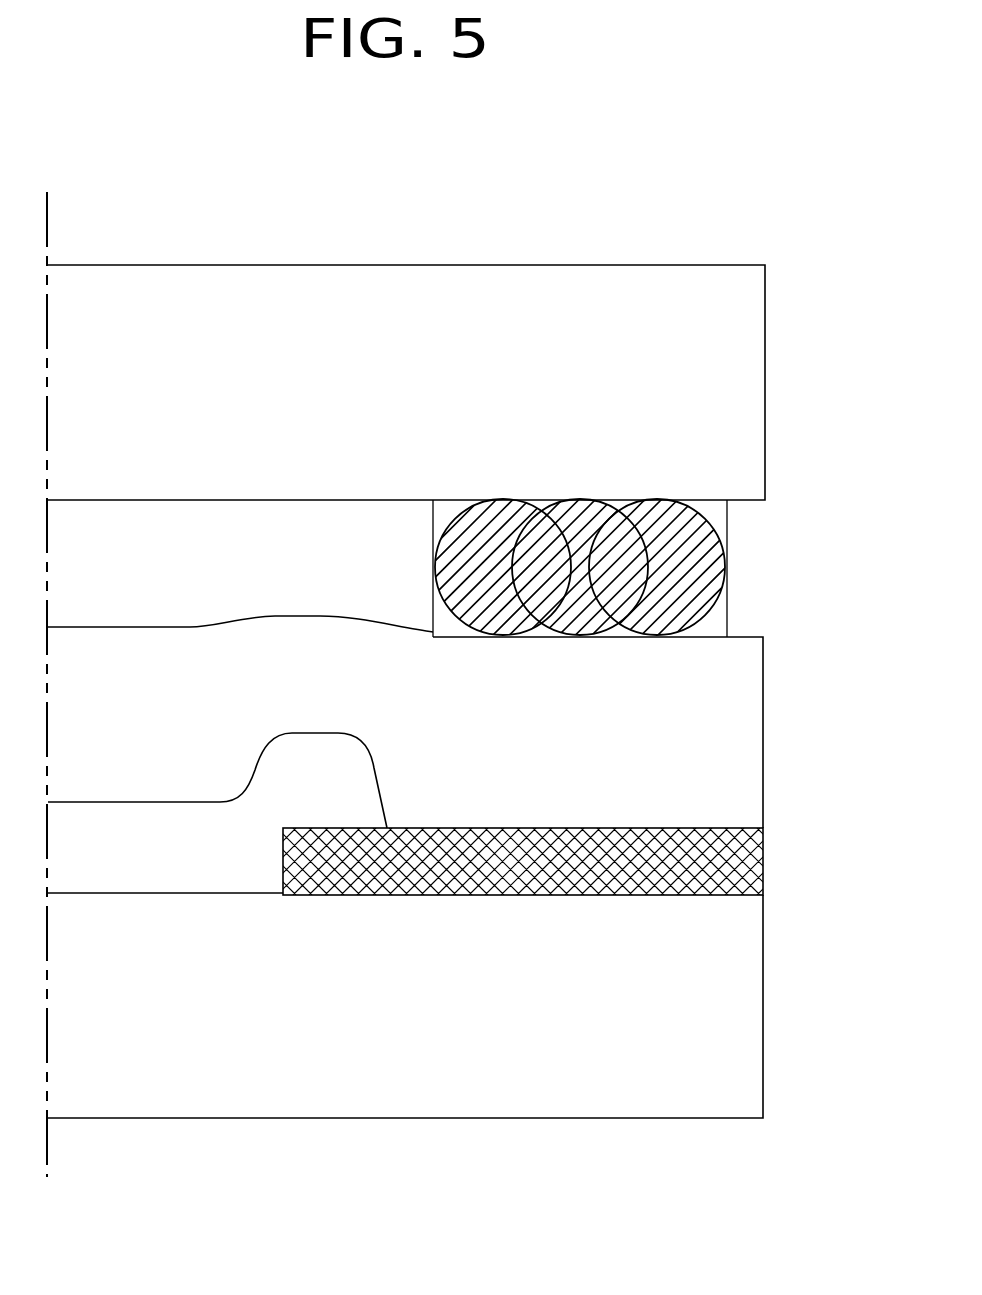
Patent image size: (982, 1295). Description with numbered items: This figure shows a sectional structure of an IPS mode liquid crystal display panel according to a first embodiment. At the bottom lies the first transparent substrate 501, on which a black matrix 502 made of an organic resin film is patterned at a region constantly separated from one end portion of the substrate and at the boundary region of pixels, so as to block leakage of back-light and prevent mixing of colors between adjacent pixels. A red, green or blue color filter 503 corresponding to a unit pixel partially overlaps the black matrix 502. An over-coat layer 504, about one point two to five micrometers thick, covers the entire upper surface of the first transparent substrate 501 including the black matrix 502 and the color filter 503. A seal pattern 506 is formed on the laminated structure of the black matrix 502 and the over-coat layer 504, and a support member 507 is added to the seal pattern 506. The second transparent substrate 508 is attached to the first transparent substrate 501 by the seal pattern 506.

The first transparent substrate 501 is at (738, 1053).
The black matrix 502 is at (763, 850).
The color filter 503 is at (215, 853).
The over-coat layer 504 is at (732, 807).
The seal pattern 506 is at (705, 627).
The support member 507 is at (722, 553).
The second transparent substrate 508 is at (705, 407).